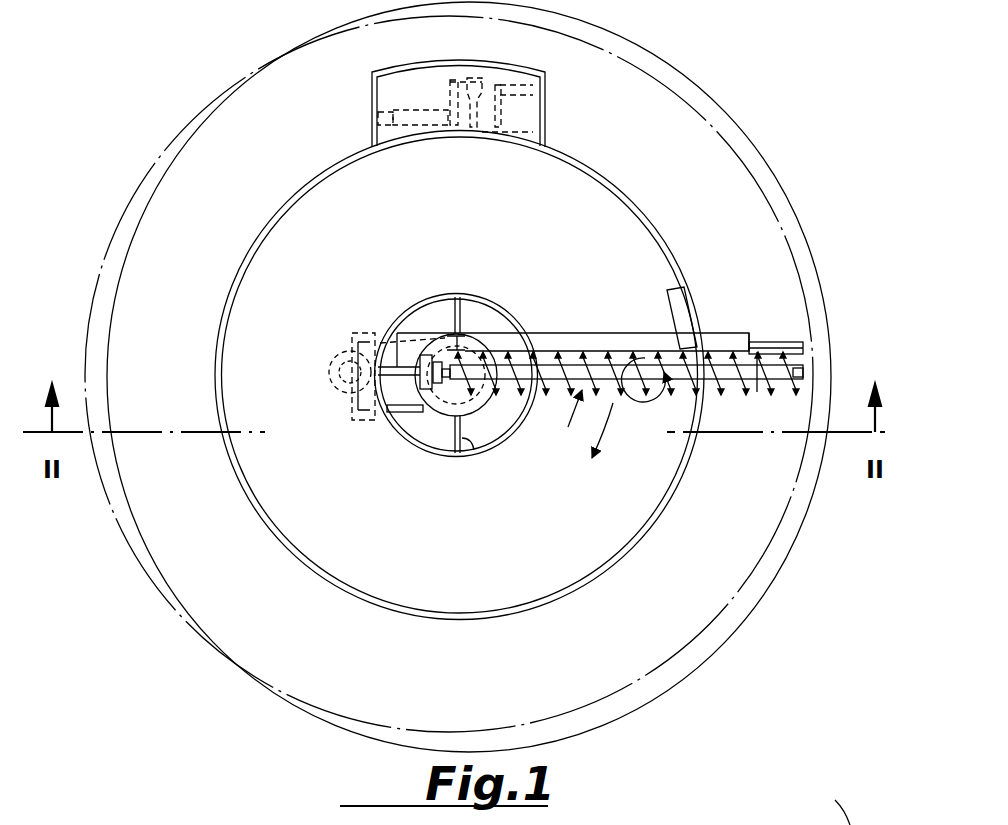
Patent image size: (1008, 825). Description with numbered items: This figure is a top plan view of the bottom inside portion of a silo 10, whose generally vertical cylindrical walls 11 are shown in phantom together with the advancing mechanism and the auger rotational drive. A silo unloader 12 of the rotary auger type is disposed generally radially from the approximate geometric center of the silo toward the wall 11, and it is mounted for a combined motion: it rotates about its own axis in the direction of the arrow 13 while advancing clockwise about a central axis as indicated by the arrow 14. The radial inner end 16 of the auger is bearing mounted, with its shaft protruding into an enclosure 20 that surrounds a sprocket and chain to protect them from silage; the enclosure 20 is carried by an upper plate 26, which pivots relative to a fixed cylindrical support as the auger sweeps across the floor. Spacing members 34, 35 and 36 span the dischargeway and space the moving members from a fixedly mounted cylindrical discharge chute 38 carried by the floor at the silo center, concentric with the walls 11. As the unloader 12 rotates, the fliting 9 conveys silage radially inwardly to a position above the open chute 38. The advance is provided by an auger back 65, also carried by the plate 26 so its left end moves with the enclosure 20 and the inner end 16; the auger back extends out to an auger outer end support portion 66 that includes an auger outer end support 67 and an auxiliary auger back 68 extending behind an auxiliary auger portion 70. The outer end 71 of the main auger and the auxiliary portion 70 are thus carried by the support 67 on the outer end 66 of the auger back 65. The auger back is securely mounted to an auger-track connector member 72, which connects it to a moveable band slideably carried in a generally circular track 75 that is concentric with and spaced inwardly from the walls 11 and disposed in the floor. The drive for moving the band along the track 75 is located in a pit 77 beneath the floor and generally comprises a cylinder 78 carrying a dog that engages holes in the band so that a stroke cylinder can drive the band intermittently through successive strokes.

The fliting 9 is at (592, 373).
The silo 10 is at (735, 107).
The cylindrical walls 11 is at (830, 801).
The silo unloader 12 is at (562, 420).
The arrow 13 is at (635, 406).
The arrow 14 is at (603, 437).
The radial inner end 16 is at (452, 385).
The enclosure 20 is at (450, 387).
The upper plate 26 is at (443, 352).
The spacing member 34 is at (397, 371).
The spacing member 35 is at (458, 312).
The spacing member 36 is at (474, 450).
The cylindrical discharge chute 38 is at (403, 440).
The auger back 65 is at (537, 342).
The auger outer end support portion 66 is at (749, 336).
The auger outer end support 67 is at (750, 345).
The auxiliary auger back 68 is at (800, 344).
The auxiliary auger portion 70 is at (803, 372).
The outer end 71 is at (758, 372).
The auger-track connector member 72 is at (684, 312).
The circular track 75 is at (620, 560).
The pit 77 is at (540, 118).
The cylinder 78 is at (525, 132).